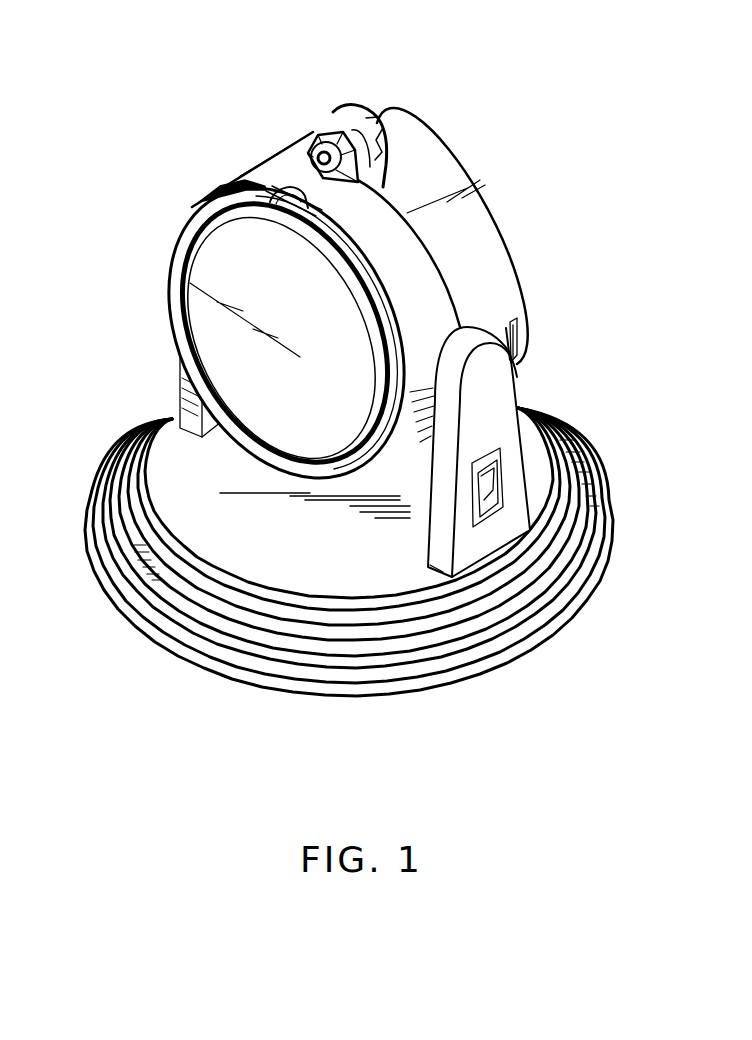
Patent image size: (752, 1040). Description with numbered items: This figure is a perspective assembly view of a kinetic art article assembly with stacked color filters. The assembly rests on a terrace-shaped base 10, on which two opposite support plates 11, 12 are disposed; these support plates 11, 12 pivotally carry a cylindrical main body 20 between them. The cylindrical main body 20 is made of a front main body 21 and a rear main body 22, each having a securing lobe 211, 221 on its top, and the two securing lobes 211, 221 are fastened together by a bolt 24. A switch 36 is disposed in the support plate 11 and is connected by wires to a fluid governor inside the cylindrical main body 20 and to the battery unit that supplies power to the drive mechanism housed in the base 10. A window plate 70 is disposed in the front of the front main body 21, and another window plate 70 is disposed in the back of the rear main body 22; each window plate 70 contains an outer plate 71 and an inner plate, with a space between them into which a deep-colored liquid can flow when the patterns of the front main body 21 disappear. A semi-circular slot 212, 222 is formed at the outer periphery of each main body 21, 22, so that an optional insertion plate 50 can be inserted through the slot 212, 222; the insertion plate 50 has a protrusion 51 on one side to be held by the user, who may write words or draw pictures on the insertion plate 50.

The terrace-shaped base 10 is at (170, 647).
The support plate 11 is at (503, 437).
The support plate 12 is at (178, 416).
The cylindrical main body 20 is at (406, 95).
The front main body 21 is at (278, 166).
The securing lobe 211 is at (322, 130).
The semi-circular slot 212 is at (393, 455).
The rear main body 22 is at (425, 160).
The securing lobe 221 is at (350, 110).
The semi-circular slot 222 is at (520, 325).
The bolt 24 is at (378, 117).
The switch 36 is at (470, 510).
The insertion plate 50 is at (264, 189).
The protrusion 51 is at (278, 192).
The window plate 70 is at (172, 350).
The outer plate 71 is at (210, 318).